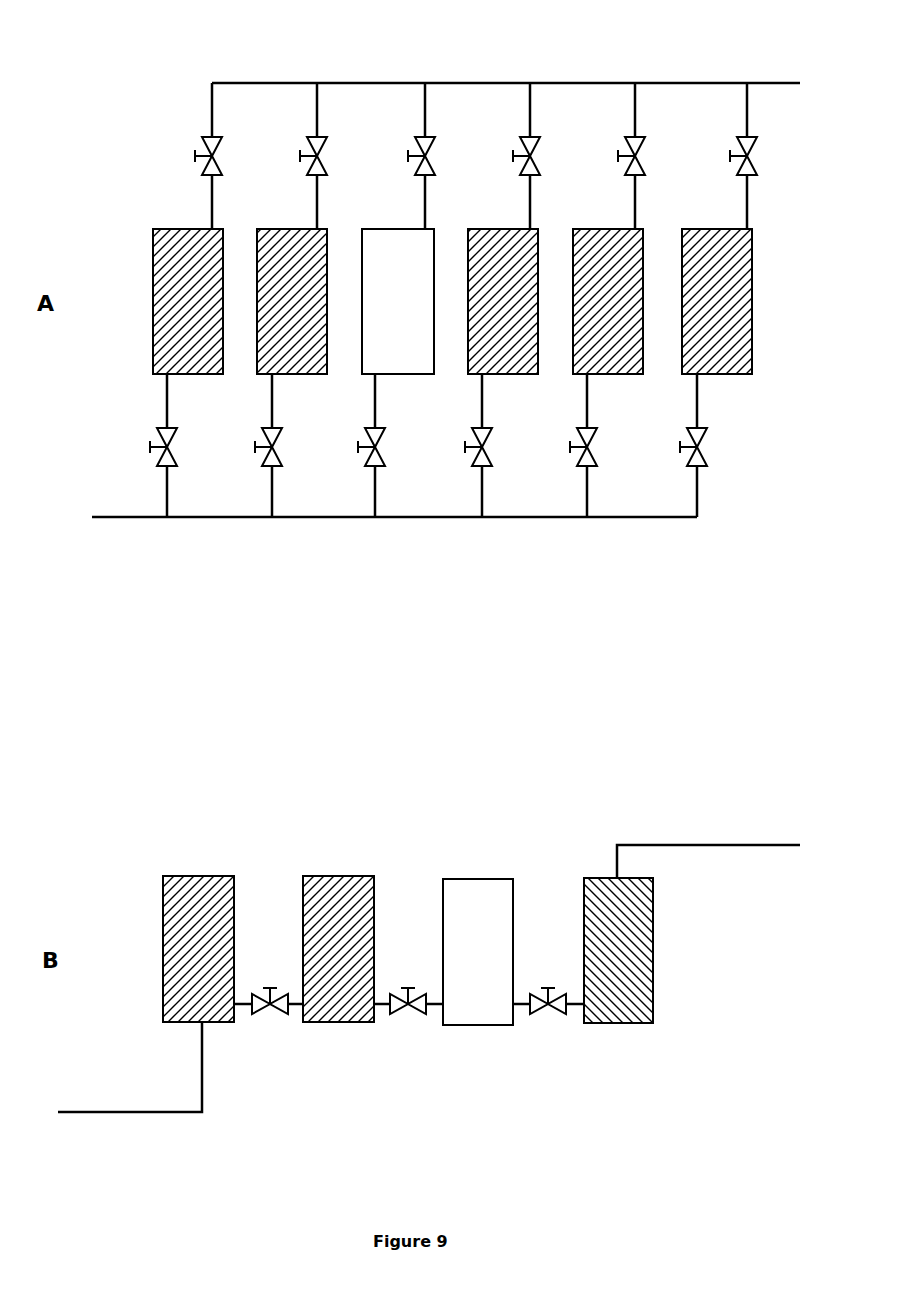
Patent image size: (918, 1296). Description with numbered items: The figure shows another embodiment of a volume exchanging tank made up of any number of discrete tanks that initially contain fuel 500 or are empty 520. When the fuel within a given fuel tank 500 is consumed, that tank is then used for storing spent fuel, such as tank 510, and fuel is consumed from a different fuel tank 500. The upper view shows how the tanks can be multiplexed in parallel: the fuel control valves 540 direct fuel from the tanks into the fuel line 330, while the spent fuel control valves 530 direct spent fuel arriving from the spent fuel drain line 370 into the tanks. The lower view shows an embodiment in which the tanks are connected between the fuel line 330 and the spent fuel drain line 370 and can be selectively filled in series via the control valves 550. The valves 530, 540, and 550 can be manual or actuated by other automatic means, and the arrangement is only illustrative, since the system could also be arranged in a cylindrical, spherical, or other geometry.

In FIG. 9A, the fuel line 330 is at (125, 528).
In FIG. 9B, the fuel line 330 is at (150, 1122).
In FIG. 9A, the spent fuel drain line 370 is at (778, 72).
In FIG. 9B, the spent fuel drain line 370 is at (755, 832).
In FIG. 9A, the fuel tank 500 is at (180, 350).
In FIG. 9B, the fuel tank 500 is at (183, 1008).
In FIG. 9A, the spent fuel tank 510 is at (498, 350).
In FIG. 9B, the spent fuel tank 510 is at (612, 997).
In FIG. 9A, the empty tank 520 is at (392, 350).
In FIG. 9B, the empty tank 520 is at (478, 997).
In FIG. 9A, the spent fuel control valves 530 is at (717, 128).
In FIG. 9A, the fuel control valves 540 is at (677, 478).
In FIG. 9B, the control valves 550 is at (268, 970).